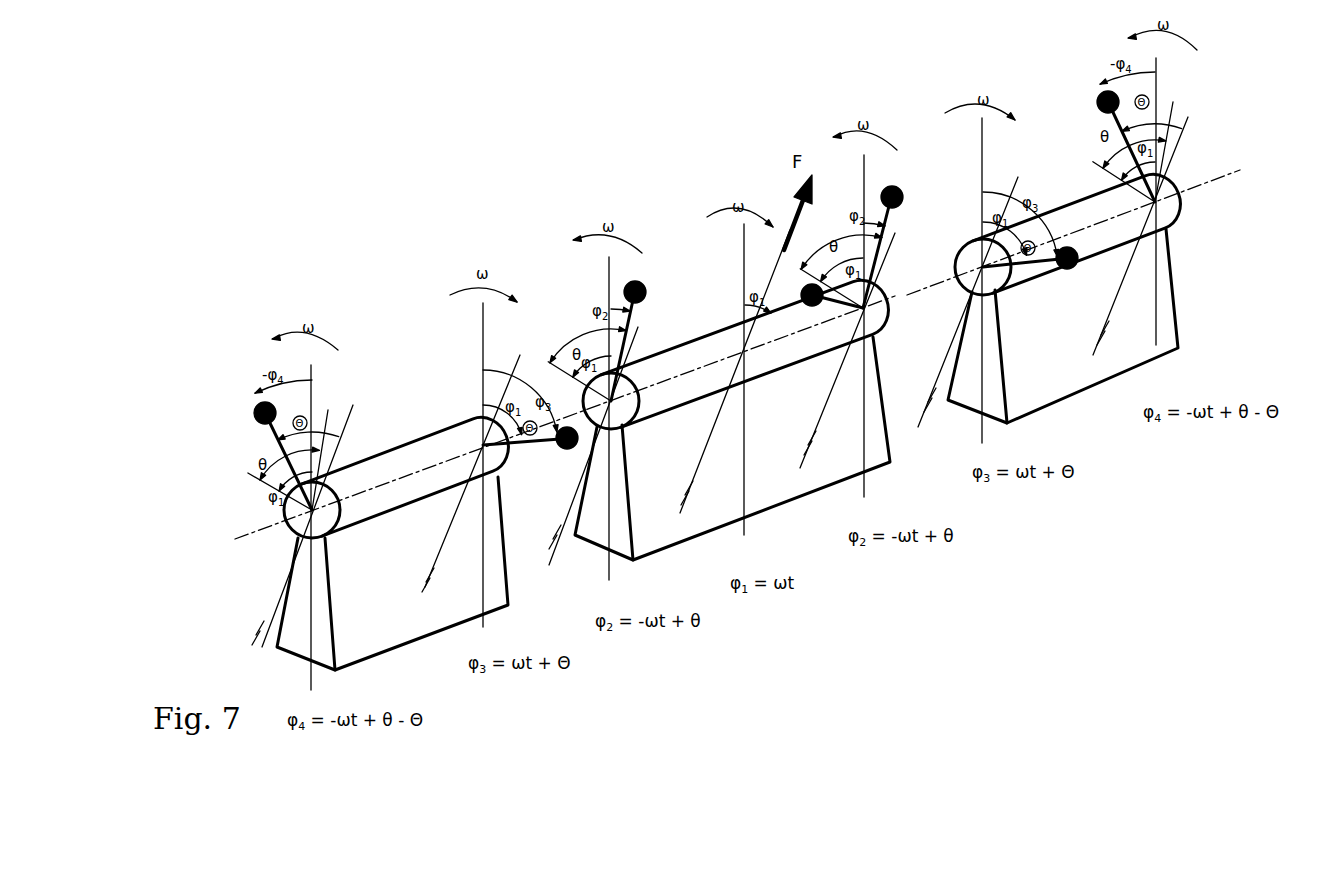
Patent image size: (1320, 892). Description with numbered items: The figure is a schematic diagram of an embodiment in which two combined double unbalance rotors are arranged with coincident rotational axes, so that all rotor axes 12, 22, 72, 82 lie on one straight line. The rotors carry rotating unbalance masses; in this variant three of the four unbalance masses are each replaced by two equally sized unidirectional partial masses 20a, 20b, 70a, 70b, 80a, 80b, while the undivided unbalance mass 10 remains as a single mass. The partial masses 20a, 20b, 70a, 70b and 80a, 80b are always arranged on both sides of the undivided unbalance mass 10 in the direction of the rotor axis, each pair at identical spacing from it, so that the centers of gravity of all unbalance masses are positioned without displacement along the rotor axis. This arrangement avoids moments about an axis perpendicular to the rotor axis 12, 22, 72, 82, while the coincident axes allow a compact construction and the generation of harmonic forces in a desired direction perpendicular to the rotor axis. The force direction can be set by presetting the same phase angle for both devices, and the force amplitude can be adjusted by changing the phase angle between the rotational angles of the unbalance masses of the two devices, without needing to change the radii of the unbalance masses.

The unbalance mass 10 is at (800, 292).
The rotor axis 12 is at (732, 420).
The rotor axis 22 is at (672, 378).
The partial mass 20a is at (623, 285).
The partial mass 20b is at (882, 183).
The partial mass 70a is at (531, 475).
The partial mass 70b is at (1057, 277).
The rotor axis 72 is at (267, 520).
The partial mass 80a is at (255, 405).
The partial mass 80b is at (1100, 95).
The rotor axis 82 is at (1212, 182).